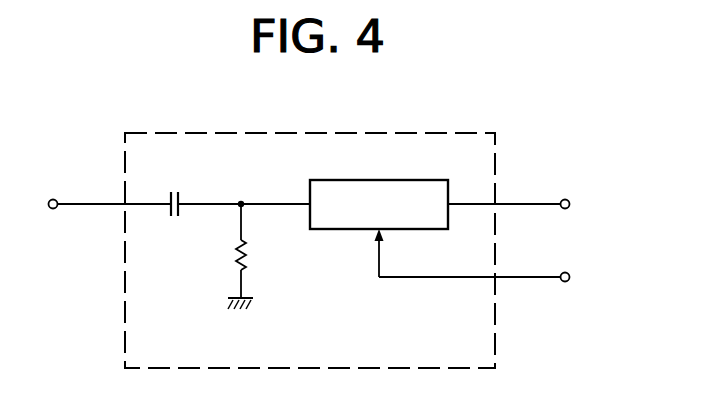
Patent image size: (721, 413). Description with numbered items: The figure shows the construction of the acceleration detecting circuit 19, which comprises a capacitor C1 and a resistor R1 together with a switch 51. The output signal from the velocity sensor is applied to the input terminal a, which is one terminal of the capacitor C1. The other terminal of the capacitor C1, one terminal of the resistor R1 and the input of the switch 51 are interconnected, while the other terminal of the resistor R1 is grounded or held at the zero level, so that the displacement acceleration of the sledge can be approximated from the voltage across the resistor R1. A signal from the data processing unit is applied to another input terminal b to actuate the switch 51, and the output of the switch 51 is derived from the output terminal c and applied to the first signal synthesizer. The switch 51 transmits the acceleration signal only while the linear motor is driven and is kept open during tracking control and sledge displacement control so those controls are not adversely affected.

The acceleration detecting circuit 19 is at (495, 149).
The switch 51 is at (381, 180).
The capacitor C1 is at (173, 190).
The resistor R1 is at (247, 249).
The input terminal a is at (100, 204).
The input terminal b is at (484, 259).
The output terminal c is at (519, 205).